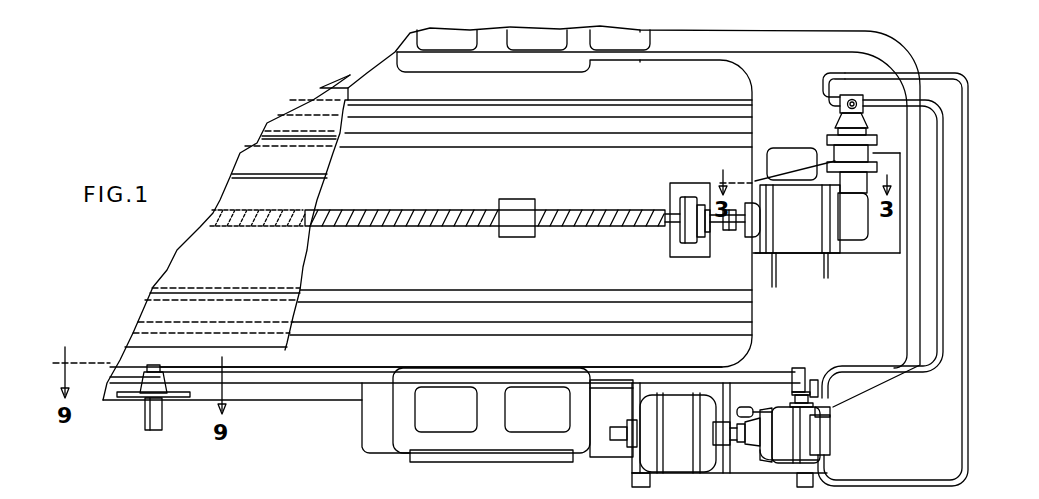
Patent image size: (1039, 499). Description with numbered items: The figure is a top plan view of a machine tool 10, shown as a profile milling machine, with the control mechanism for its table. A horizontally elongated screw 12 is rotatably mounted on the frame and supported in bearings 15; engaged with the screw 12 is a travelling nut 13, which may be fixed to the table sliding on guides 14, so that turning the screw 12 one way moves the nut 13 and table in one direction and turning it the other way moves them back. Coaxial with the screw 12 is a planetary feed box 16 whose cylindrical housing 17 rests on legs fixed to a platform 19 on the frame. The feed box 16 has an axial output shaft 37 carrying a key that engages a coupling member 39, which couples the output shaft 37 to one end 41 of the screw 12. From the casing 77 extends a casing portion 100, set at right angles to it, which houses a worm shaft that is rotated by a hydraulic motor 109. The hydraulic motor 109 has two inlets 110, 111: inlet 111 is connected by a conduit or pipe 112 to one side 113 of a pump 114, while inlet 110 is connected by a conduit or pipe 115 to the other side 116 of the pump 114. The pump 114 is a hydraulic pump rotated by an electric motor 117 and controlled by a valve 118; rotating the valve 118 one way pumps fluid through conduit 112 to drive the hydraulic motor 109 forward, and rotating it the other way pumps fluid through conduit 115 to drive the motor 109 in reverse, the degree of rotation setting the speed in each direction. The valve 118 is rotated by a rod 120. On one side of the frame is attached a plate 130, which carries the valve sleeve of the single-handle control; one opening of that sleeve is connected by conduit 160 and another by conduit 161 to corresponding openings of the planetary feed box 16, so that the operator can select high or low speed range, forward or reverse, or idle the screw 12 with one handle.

The machine tool 10 is at (322, 426).
The screw 12 is at (395, 213).
The travelling nut 13 is at (525, 205).
The guides 14 is at (473, 125).
The bearings 15 is at (687, 200).
The planetary feed box 16 is at (807, 254).
The cylindrical housing 17 is at (792, 219).
The platform 19 is at (887, 247).
The output shaft 37 is at (750, 240).
The coupling member 39 is at (731, 231).
The end of the screw 41 is at (707, 217).
The casing 77 is at (857, 240).
The casing portion 100 is at (857, 185).
The hydraulic motor 109 is at (840, 127).
The inlet 110 is at (866, 99).
The inlet 111 is at (838, 98).
The conduit or pipe 112 is at (965, 307).
The side of pump 113 is at (826, 449).
The pump 114 is at (822, 430).
The conduit or pipe 115 is at (944, 188).
The side of pump 116 is at (828, 403).
The electric motor 117 is at (670, 433).
The valve 118 is at (805, 380).
The rod 120 is at (680, 372).
The plate 130 is at (177, 398).
The conduit 160 is at (823, 278).
The conduit 161 is at (769, 286).